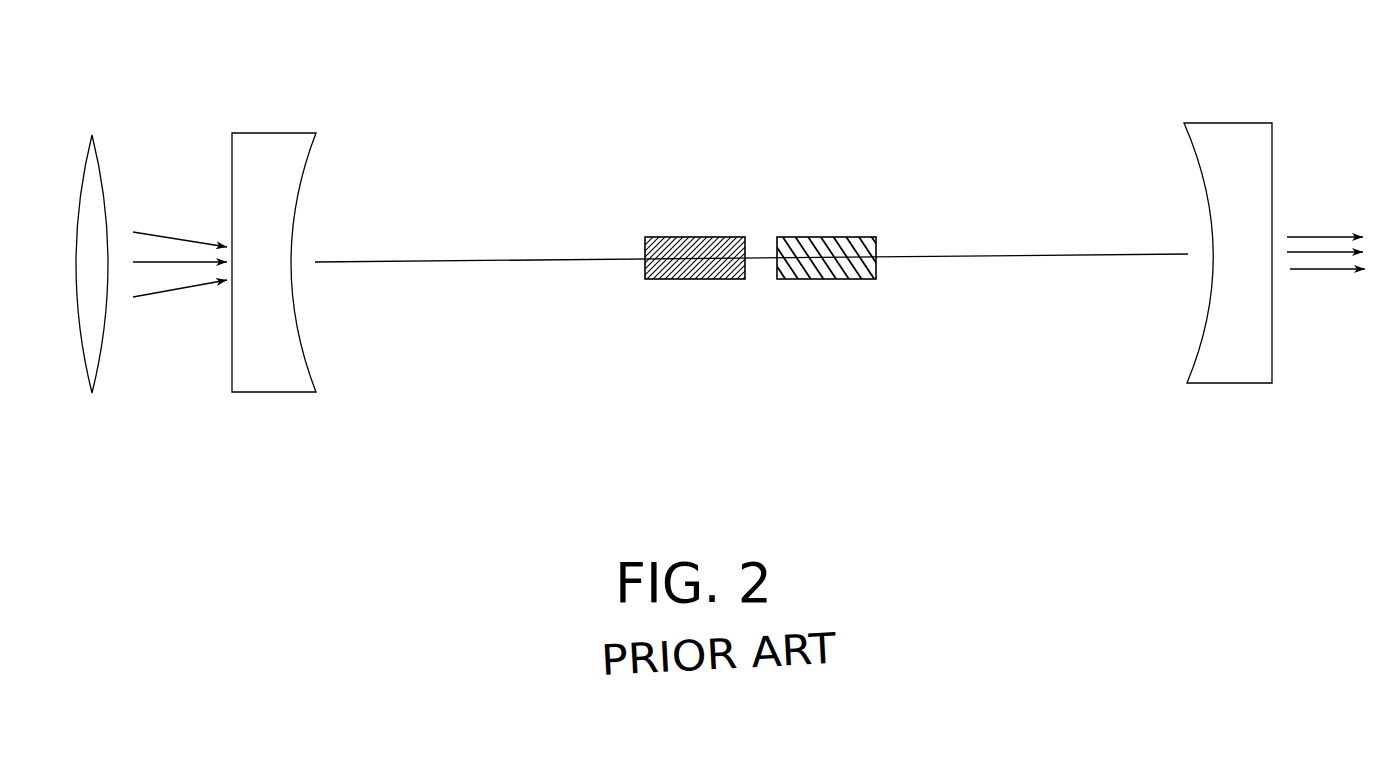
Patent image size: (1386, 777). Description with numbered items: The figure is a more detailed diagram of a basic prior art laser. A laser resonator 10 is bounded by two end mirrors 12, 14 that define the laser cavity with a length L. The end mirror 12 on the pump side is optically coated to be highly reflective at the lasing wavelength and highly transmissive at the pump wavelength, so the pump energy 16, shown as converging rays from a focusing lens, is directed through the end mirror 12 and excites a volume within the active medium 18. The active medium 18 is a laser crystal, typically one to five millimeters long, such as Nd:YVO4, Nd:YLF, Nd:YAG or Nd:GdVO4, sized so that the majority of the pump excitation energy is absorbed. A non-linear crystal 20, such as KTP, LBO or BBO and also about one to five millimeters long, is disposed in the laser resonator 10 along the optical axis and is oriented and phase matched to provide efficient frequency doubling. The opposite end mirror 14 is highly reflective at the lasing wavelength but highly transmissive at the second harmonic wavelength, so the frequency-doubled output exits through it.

The laser resonator 10 is at (925, 385).
The end mirror 12 is at (277, 130).
The end mirror 14 is at (1232, 120).
The pump energy 16 is at (182, 235).
The active medium 18 is at (690, 237).
The non-linear crystal 20 is at (830, 237).